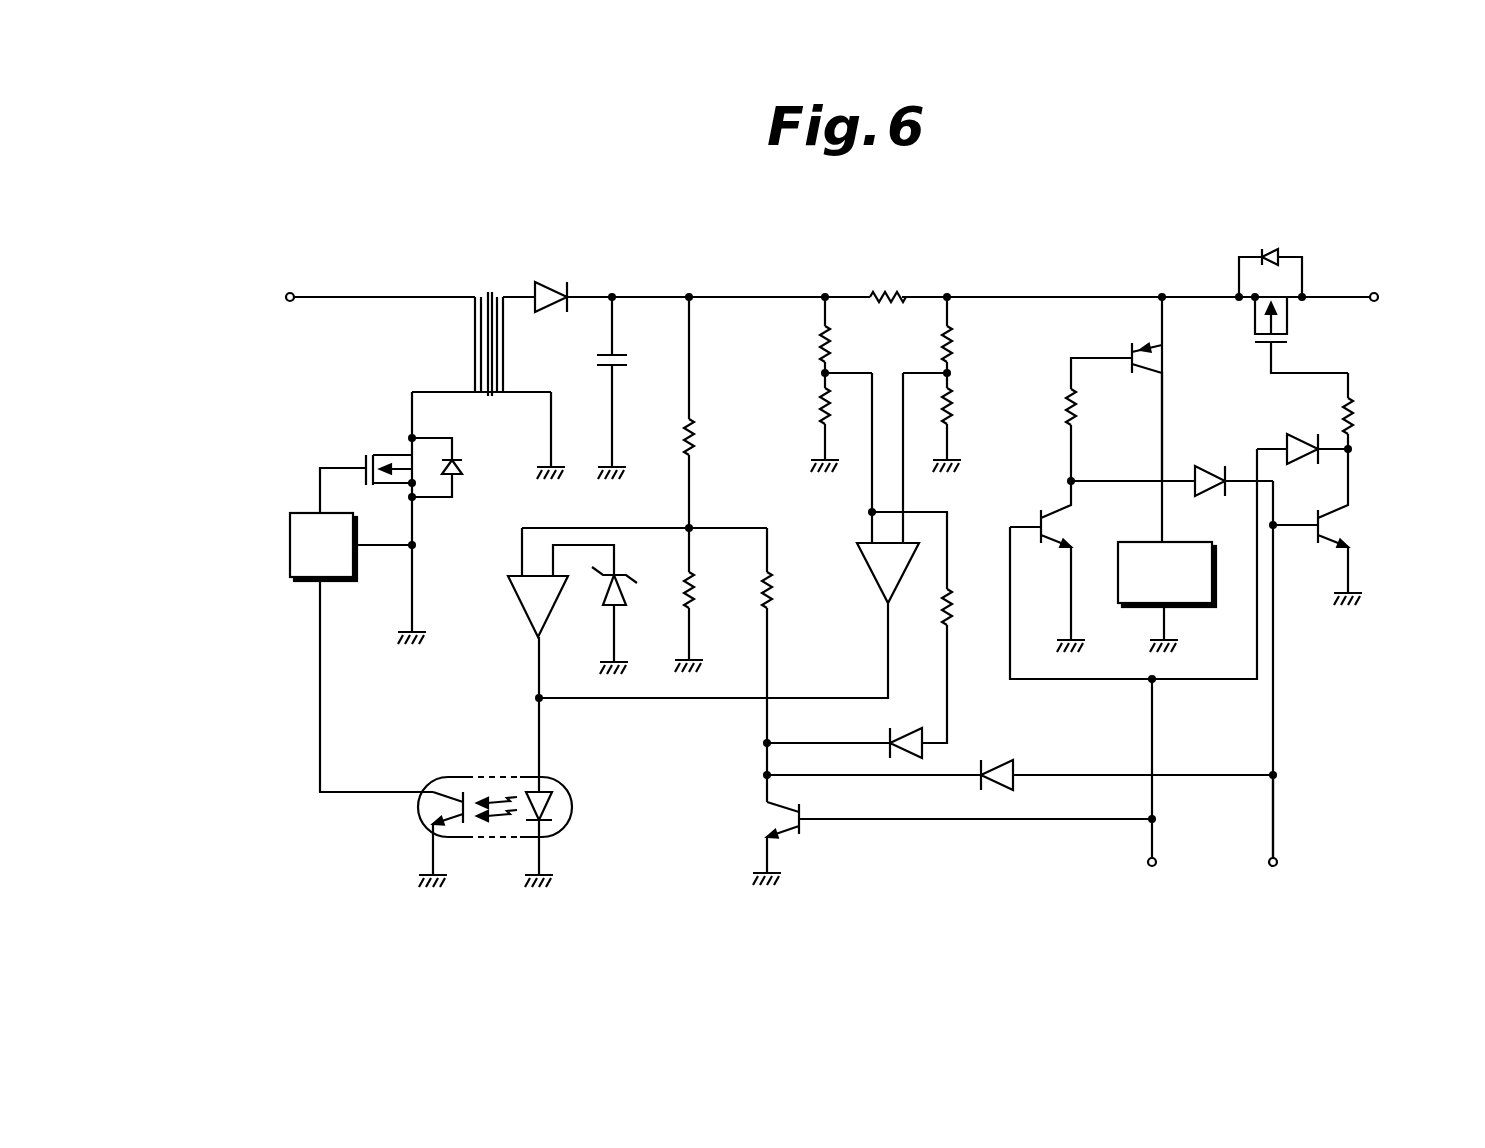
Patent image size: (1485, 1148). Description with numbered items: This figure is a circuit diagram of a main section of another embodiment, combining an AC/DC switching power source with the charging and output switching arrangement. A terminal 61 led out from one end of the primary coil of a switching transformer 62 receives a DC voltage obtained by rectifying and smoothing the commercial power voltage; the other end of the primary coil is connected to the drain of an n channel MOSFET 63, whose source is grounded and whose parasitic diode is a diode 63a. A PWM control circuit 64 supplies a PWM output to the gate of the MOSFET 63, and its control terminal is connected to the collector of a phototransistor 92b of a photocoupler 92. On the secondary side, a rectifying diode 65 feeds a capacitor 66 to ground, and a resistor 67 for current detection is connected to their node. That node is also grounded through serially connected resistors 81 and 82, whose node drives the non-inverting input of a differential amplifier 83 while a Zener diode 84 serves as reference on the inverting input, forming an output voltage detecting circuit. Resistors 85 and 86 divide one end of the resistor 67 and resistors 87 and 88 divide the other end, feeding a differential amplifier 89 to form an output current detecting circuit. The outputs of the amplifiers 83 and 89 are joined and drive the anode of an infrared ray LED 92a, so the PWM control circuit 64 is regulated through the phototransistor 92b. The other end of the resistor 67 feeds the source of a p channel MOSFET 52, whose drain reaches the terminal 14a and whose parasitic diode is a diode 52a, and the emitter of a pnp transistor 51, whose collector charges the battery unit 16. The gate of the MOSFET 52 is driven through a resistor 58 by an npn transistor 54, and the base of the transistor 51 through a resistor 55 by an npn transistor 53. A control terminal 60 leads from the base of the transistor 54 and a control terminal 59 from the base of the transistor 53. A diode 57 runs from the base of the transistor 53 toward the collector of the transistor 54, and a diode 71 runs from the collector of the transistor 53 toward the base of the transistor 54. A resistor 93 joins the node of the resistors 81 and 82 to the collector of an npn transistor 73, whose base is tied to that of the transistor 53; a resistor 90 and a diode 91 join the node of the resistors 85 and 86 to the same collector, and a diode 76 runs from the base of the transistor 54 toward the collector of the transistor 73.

The terminal 14a is at (1383, 297).
The battery unit 16 is at (1180, 542).
The pnp type transistor 51 is at (1170, 357).
The MOSFET 52 is at (1290, 310).
The diode 52a is at (1260, 246).
The npn type transistor 53 is at (1074, 526).
The npn type transistor 54 is at (1350, 527).
The resistor 55 is at (1080, 408).
The diode 57 is at (1287, 433).
The resistor 58 is at (1355, 418).
The control terminal 59 is at (1152, 870).
The control terminal 60 is at (1273, 870).
The terminal 61 is at (282, 297).
The switching transformer 62 is at (488, 297).
The MOSFET 63 is at (370, 453).
The diode 63a is at (462, 470).
The PWM control circuit 64 is at (288, 545).
The rectifying diode 65 is at (549, 272).
The capacitor 66 is at (592, 360).
The resistor for current detection 67 is at (876, 282).
The diode 71 is at (1203, 463).
The npn type transistor 73 is at (765, 820).
The diode 76 is at (993, 758).
The resistor 81 is at (684, 437).
The resistor 82 is at (684, 588).
The differential amplifier 83 is at (520, 606).
The Zener diode 84 is at (606, 608).
The resistor 85 is at (815, 345).
The resistor 86 is at (815, 407).
The resistor 87 is at (956, 348).
The resistor 88 is at (956, 409).
The differential amplifier 89 is at (872, 574).
The resistor 90 is at (953, 578).
The diode 91 is at (905, 725).
The photocoupler 92 is at (438, 775).
The infrared ray LED 92a is at (570, 807).
The phototransistor 92b is at (432, 807).
The resistor 93 is at (761, 588).